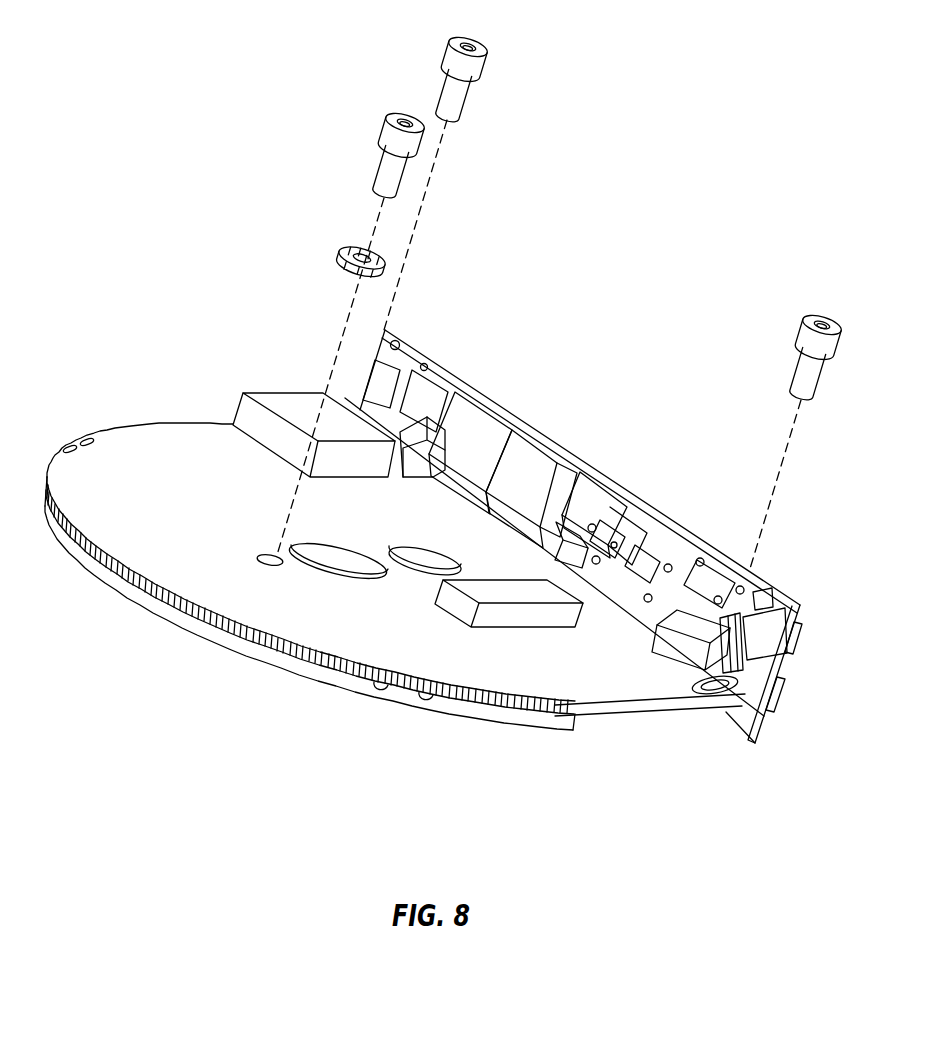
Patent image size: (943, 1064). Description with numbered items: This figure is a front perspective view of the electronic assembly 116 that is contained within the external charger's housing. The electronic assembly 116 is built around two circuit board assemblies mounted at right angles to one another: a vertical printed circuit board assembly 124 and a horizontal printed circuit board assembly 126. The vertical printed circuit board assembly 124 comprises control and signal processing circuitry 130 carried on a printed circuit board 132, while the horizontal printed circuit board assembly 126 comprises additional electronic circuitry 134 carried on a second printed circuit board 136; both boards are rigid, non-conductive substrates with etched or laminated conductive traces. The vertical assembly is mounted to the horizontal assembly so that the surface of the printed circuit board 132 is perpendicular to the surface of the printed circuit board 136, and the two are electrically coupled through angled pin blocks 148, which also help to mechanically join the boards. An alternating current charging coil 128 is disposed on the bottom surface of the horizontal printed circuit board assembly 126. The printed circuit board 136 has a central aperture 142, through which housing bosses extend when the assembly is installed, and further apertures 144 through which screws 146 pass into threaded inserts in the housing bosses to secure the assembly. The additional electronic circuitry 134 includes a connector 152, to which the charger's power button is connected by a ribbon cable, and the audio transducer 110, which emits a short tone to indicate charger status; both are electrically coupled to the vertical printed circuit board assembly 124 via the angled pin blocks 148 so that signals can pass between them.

The electronic assembly 116 is at (146, 84).
The audio transducer 110 is at (272, 392).
The vertical printed circuit board assembly 124 is at (474, 378).
The horizontal printed circuit board assembly 126 is at (127, 435).
The alternating current charging coil 128 is at (165, 619).
The control and signal processing circuitry 130 is at (503, 415).
The printed circuit board 132 is at (680, 518).
The additional electronic circuitry 134 is at (283, 434).
The printed circuit board 136 is at (515, 706).
The aperture 142 is at (343, 566).
The apertures 144 is at (268, 556).
The screws 146 is at (452, 54).
The angled pin blocks 148 is at (375, 365).
The connector 152 is at (527, 598).